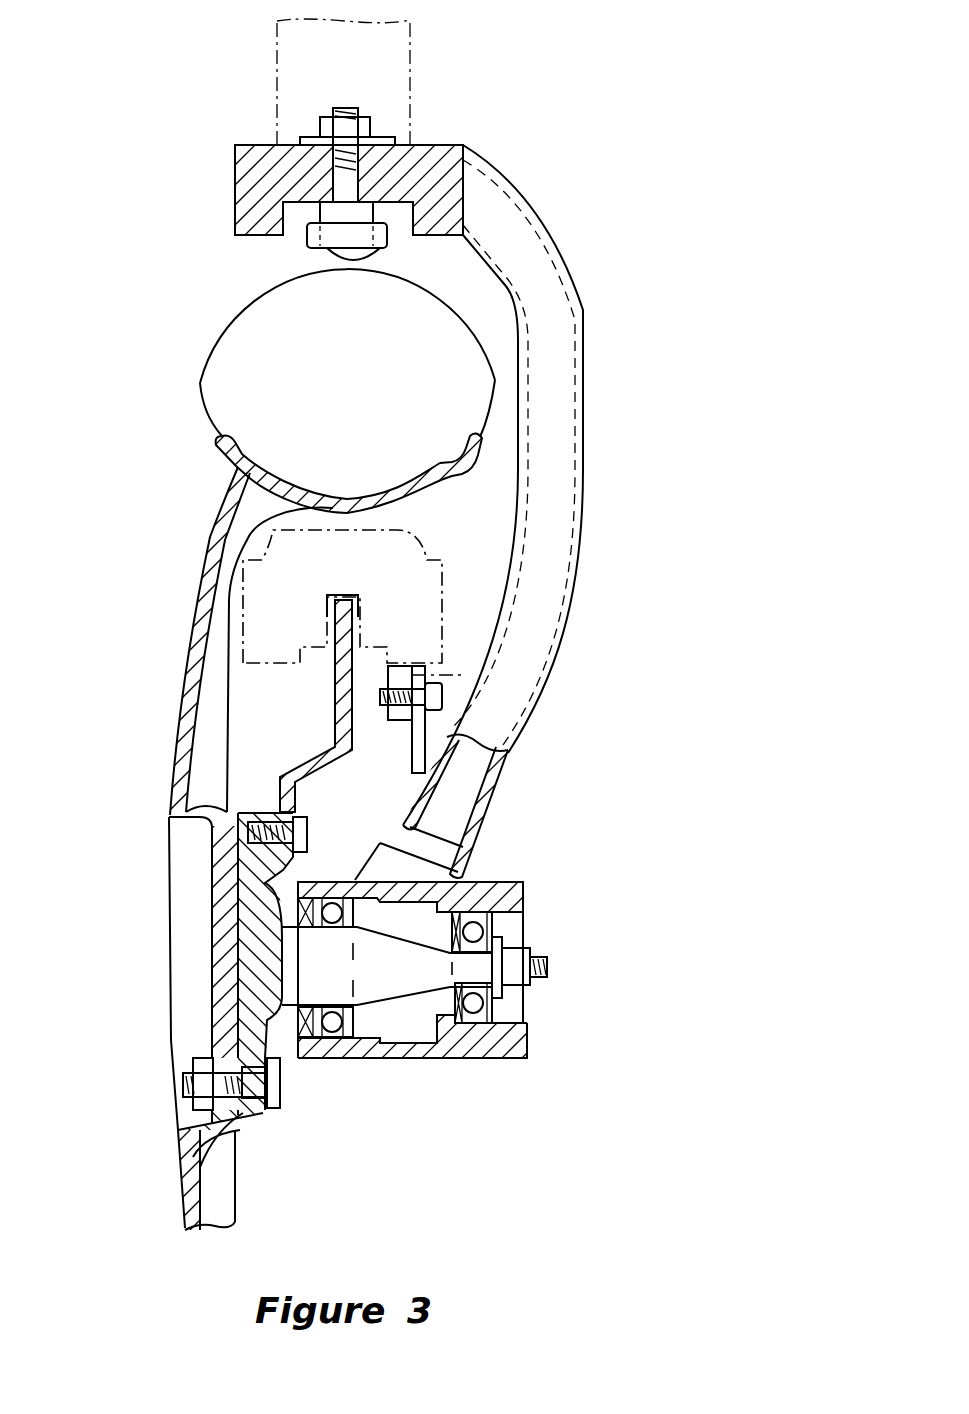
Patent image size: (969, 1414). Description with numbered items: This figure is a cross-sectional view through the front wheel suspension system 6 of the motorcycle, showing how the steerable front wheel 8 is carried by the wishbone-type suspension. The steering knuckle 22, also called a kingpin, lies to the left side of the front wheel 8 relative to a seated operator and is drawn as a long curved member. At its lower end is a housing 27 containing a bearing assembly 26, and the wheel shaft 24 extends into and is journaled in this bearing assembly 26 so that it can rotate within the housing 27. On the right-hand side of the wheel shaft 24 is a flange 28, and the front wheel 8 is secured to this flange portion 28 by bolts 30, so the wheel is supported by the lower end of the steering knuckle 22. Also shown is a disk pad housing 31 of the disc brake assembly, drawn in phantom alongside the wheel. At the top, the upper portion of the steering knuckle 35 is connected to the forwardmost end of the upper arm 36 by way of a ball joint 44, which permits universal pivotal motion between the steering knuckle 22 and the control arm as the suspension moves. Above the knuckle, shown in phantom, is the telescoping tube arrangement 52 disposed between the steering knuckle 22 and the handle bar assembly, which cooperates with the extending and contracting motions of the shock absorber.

The front wheel suspension system 6 is at (632, 240).
The front wheel 8 is at (187, 647).
The steering knuckle 22 is at (590, 431).
The wheel shaft 24 is at (403, 960).
The bearing assembly 26 is at (333, 1028).
The housing 27 is at (497, 1058).
The flange 28 is at (253, 877).
The bolts 30 is at (335, 680).
The disk pad housing 31 is at (240, 647).
The upper portion of the steering knuckle 35 is at (435, 153).
The upper arm 36 is at (307, 242).
The ball joint 44 is at (368, 266).
The telescoping tube arrangement 52 is at (395, 48).